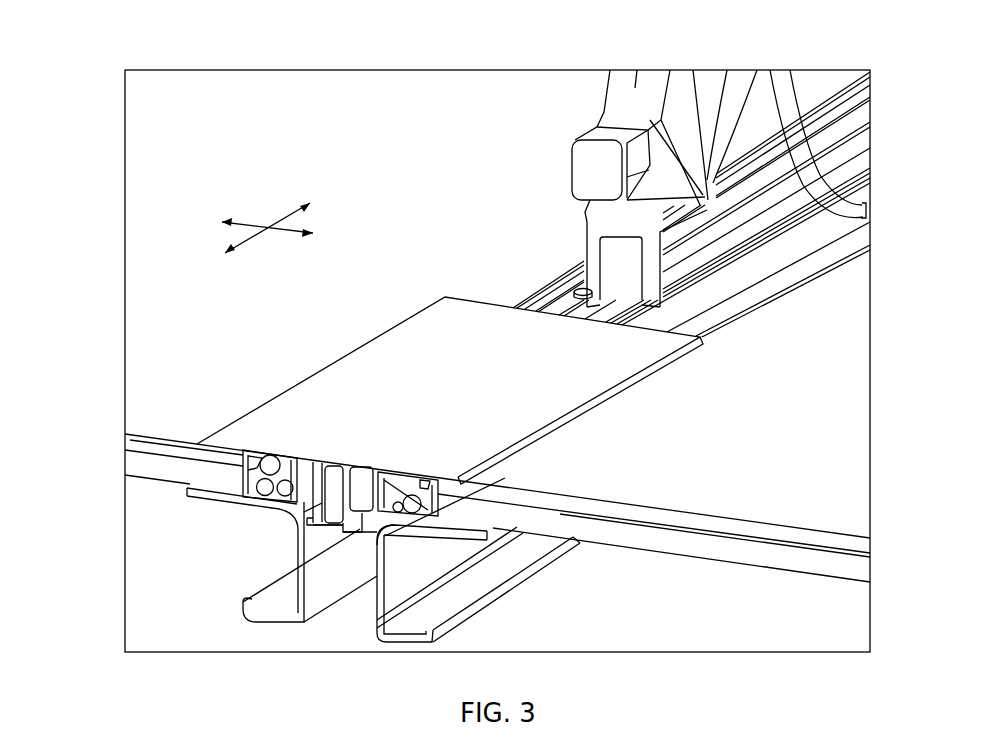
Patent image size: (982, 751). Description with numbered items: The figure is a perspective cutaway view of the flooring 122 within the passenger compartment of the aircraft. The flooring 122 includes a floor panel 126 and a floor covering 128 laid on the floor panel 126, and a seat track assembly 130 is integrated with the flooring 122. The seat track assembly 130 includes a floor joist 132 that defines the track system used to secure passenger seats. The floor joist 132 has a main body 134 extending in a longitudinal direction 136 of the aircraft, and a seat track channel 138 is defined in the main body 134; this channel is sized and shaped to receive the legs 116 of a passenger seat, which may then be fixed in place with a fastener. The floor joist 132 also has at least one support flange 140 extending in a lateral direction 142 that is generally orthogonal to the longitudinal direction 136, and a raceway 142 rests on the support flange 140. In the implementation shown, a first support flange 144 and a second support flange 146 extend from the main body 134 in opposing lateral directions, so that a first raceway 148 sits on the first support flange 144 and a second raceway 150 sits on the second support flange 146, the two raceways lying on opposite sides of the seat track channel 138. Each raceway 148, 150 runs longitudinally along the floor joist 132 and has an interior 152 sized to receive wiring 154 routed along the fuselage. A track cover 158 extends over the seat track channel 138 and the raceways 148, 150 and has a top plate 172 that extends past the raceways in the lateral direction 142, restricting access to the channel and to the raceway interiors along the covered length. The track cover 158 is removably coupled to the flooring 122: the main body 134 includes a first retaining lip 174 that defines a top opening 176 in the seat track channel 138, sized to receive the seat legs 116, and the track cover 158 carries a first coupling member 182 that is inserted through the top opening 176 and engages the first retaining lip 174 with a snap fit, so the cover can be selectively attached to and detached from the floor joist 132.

The legs 116 is at (637, 87).
The flooring 122 is at (84, 470).
The floor panel 126 is at (133, 462).
The floor covering 128 is at (135, 441).
The seat track assembly 130 is at (406, 286).
The floor joist 132 is at (423, 633).
The main body 134 is at (375, 528).
The longitudinal direction 136 is at (285, 215).
The seat track channel 138 is at (357, 540).
The support flange 140 is at (382, 555).
The lateral direction 142 is at (280, 232).
The first support flange 144 is at (237, 507).
The second support flange 146 is at (462, 537).
The first raceway 148 is at (245, 473).
The second raceway 150 is at (430, 507).
The interior 152 is at (272, 462).
The wiring 154 is at (762, 97).
The track cover 158 is at (472, 365).
The top plate 172 is at (683, 347).
The first retaining lip 174 is at (298, 528).
The top opening 176 is at (357, 491).
The first coupling member 182 is at (318, 527).